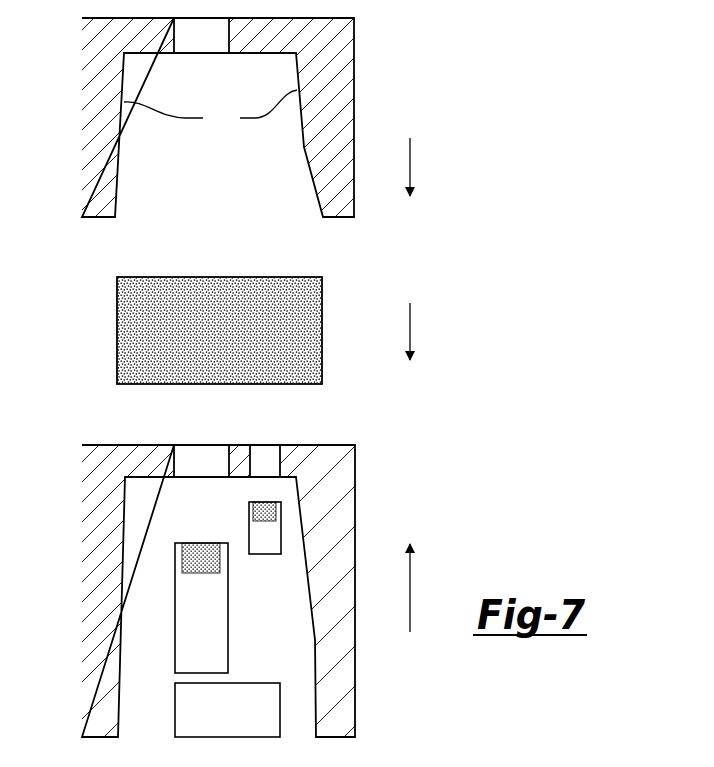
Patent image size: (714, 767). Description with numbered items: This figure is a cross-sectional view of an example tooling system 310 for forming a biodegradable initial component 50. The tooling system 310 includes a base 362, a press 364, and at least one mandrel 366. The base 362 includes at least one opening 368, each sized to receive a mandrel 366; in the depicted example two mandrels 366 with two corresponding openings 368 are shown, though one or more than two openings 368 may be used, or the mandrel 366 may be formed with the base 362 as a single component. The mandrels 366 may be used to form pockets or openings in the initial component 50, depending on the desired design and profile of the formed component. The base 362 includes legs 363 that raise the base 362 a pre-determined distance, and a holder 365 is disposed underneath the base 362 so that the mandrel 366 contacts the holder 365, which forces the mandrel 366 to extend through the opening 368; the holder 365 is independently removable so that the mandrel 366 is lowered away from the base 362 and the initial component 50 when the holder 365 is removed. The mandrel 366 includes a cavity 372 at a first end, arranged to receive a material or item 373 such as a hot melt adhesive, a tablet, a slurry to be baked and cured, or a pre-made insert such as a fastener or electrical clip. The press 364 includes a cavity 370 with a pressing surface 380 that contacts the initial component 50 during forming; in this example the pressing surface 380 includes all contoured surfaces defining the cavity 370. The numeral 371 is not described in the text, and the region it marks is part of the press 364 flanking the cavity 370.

The biodegradable initial component 50 is at (130, 311).
The tooling system 310 is at (390, 278).
The base 362 is at (330, 458).
The legs 363 is at (103, 617).
The press 364 is at (335, 100).
The holder 365 is at (243, 722).
The mandrel 366 is at (266, 548).
The opening 368 is at (251, 455).
The cavity 370 is at (176, 164).
The upper die flange 371 is at (105, 62).
The cavity 372 is at (186, 543).
The material or item 373 is at (255, 508).
The pressing surface 380 is at (247, 53).